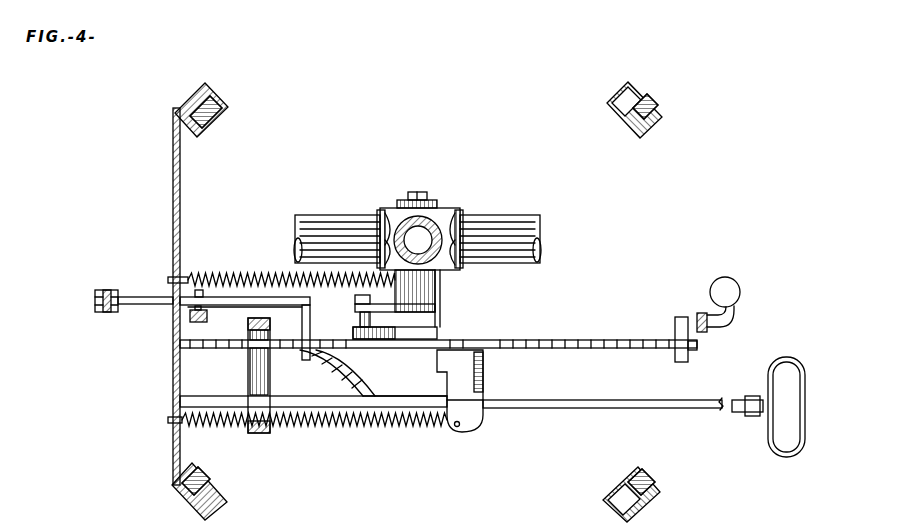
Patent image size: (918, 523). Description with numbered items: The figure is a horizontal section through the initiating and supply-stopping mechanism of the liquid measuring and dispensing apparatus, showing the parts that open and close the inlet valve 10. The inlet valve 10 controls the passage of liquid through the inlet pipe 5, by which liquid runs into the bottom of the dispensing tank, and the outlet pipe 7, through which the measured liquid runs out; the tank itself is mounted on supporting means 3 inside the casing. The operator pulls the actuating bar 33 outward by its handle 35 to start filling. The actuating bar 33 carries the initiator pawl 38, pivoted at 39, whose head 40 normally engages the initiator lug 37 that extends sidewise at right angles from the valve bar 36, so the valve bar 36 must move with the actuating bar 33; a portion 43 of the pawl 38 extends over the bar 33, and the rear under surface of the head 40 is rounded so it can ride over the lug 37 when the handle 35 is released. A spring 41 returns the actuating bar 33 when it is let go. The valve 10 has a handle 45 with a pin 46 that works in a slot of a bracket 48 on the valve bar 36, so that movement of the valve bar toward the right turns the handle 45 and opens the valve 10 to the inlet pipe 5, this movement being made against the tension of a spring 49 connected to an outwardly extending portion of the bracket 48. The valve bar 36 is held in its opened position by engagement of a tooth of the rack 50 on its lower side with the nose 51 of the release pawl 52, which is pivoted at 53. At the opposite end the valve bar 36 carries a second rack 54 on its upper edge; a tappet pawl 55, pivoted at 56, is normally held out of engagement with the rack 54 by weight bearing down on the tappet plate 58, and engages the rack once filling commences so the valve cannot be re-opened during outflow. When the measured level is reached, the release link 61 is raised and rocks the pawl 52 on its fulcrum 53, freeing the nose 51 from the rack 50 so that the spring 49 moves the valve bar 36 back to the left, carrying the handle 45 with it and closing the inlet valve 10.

The supporting means 3 is at (228, 102).
The inlet pipe 5 is at (334, 219).
The outlet pipe 7 is at (505, 223).
The inlet valve 10 is at (440, 207).
The actuating bar 33 is at (640, 406).
The handle 35 is at (783, 455).
The valve bar 36 is at (508, 343).
The initiator lug 37 is at (485, 368).
The initiator pawl 38 is at (416, 396).
The pivot 39 is at (396, 396).
The head 40 is at (465, 387).
The spring 41 is at (377, 430).
The portion 43 is at (470, 415).
The handle 45 is at (355, 309).
The pin 46 is at (360, 324).
The bracket 48 is at (365, 340).
The spring 49 is at (256, 273).
The rack 50 is at (222, 349).
The nose 51 is at (313, 361).
The release pawl 52 is at (152, 303).
The fulcrum 53 is at (200, 322).
The second rack 54 is at (580, 340).
The tappet pawl 55 is at (675, 333).
The pivot 56 is at (699, 313).
The tappet plate 58 is at (733, 288).
The release link 61 is at (96, 292).